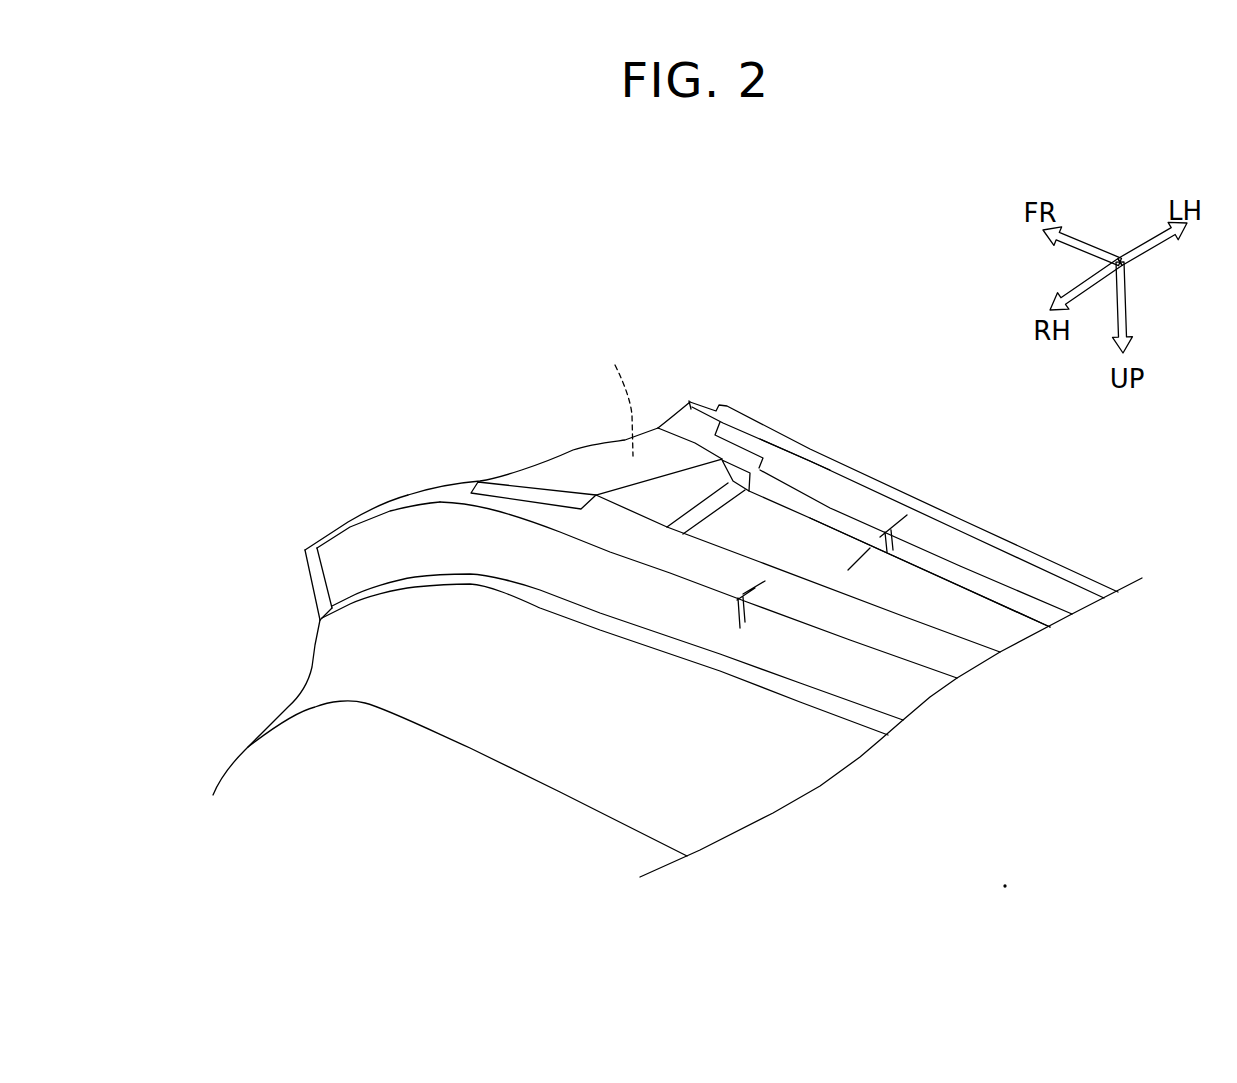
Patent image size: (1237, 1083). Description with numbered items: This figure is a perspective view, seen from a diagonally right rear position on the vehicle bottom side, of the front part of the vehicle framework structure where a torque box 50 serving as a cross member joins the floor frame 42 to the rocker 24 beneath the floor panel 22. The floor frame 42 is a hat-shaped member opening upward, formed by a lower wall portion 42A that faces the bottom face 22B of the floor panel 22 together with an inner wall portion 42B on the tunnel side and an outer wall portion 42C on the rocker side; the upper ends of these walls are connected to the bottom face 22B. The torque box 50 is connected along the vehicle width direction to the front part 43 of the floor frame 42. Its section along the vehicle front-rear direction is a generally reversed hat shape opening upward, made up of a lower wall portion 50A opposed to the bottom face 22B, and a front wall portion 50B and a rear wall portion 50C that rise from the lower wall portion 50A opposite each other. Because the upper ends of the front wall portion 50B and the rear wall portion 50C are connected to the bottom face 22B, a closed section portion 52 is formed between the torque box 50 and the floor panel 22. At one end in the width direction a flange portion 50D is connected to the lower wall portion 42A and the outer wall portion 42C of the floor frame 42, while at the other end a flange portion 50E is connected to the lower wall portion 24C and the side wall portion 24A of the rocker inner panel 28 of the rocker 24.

The floor panel 22 is at (930, 572).
The bottom face 22B is at (843, 547).
The rocker 24 is at (970, 523).
The side wall portion 24A is at (783, 497).
The lower wall portion 24C is at (747, 443).
The rocker inner panel 28 is at (812, 466).
The floor frame 42 is at (407, 494).
The lower wall portion 42A is at (687, 568).
The inner wall portion 42B is at (565, 577).
The outer wall portion 42C is at (820, 580).
The front part 43 is at (390, 512).
The torque box 50 is at (570, 443).
The lower wall portion 50A is at (550, 457).
The front wall portion 50B is at (507, 472).
The rear wall portion 50C is at (682, 492).
The flange portion 50D is at (512, 512).
The flange portion 50E is at (688, 418).
The closed section portion 52 is at (600, 357).